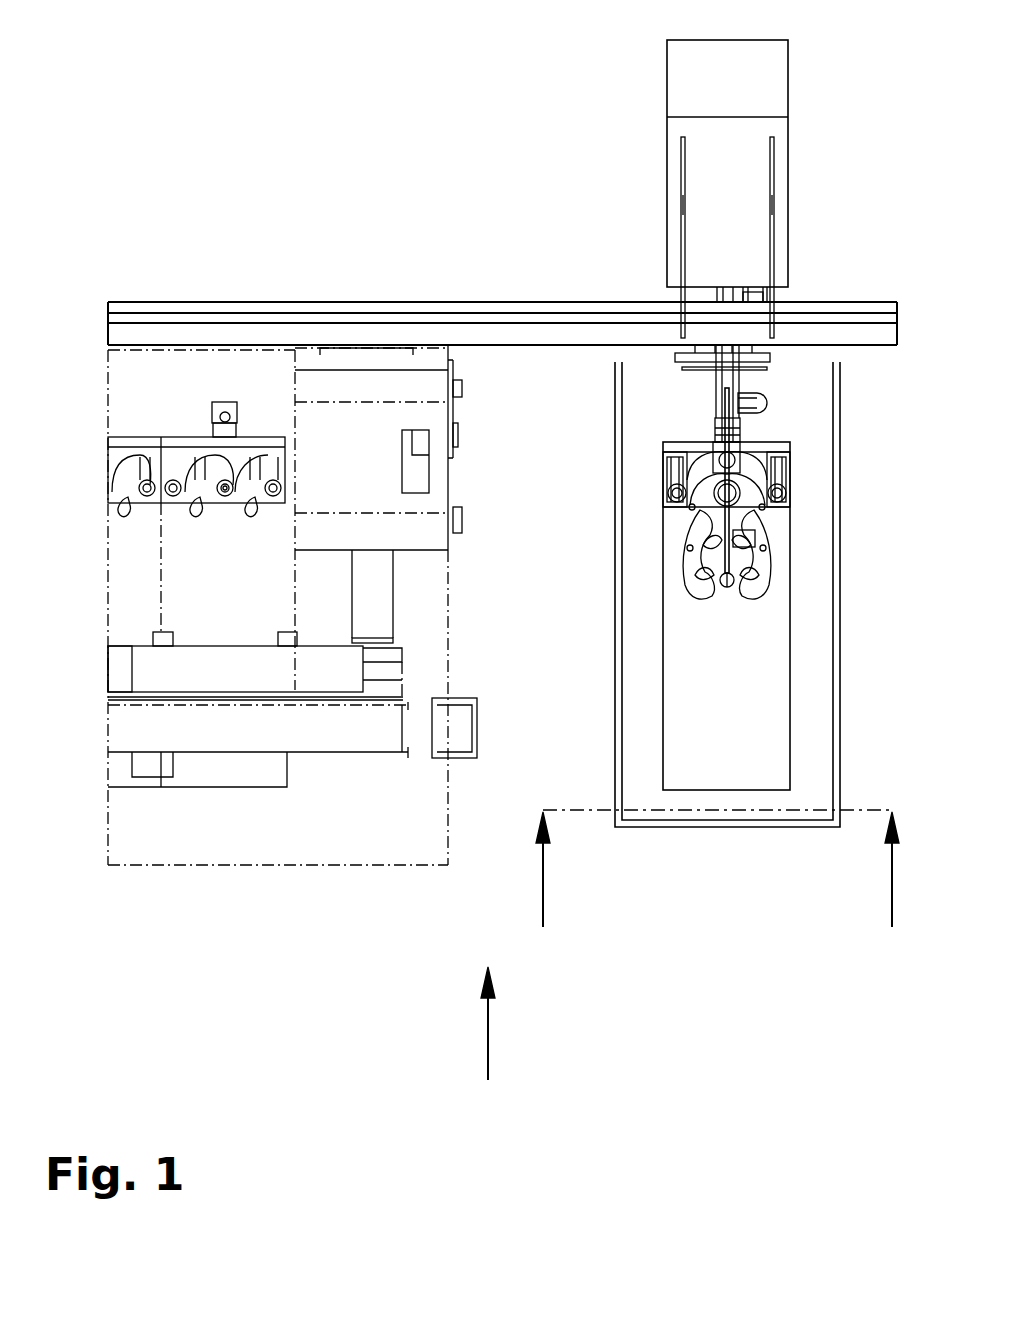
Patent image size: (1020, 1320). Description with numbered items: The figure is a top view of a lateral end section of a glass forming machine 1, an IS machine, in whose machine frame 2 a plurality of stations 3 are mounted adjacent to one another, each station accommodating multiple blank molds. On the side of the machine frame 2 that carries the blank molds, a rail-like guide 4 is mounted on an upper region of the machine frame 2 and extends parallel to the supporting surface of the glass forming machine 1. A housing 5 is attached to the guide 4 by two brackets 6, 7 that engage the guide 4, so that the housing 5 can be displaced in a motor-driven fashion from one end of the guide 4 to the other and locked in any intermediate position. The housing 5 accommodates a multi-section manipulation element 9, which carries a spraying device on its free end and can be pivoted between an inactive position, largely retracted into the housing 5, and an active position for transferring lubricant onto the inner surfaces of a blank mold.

The glass forming machine 1 is at (172, 912).
The machine frame 2 is at (288, 883).
The stations 3 is at (228, 557).
The rail-like guide 4 is at (874, 301).
The housing 5 is at (788, 77).
The bracket 6 is at (775, 168).
The bracket 7 is at (681, 168).
The manipulation element 9 is at (743, 380).